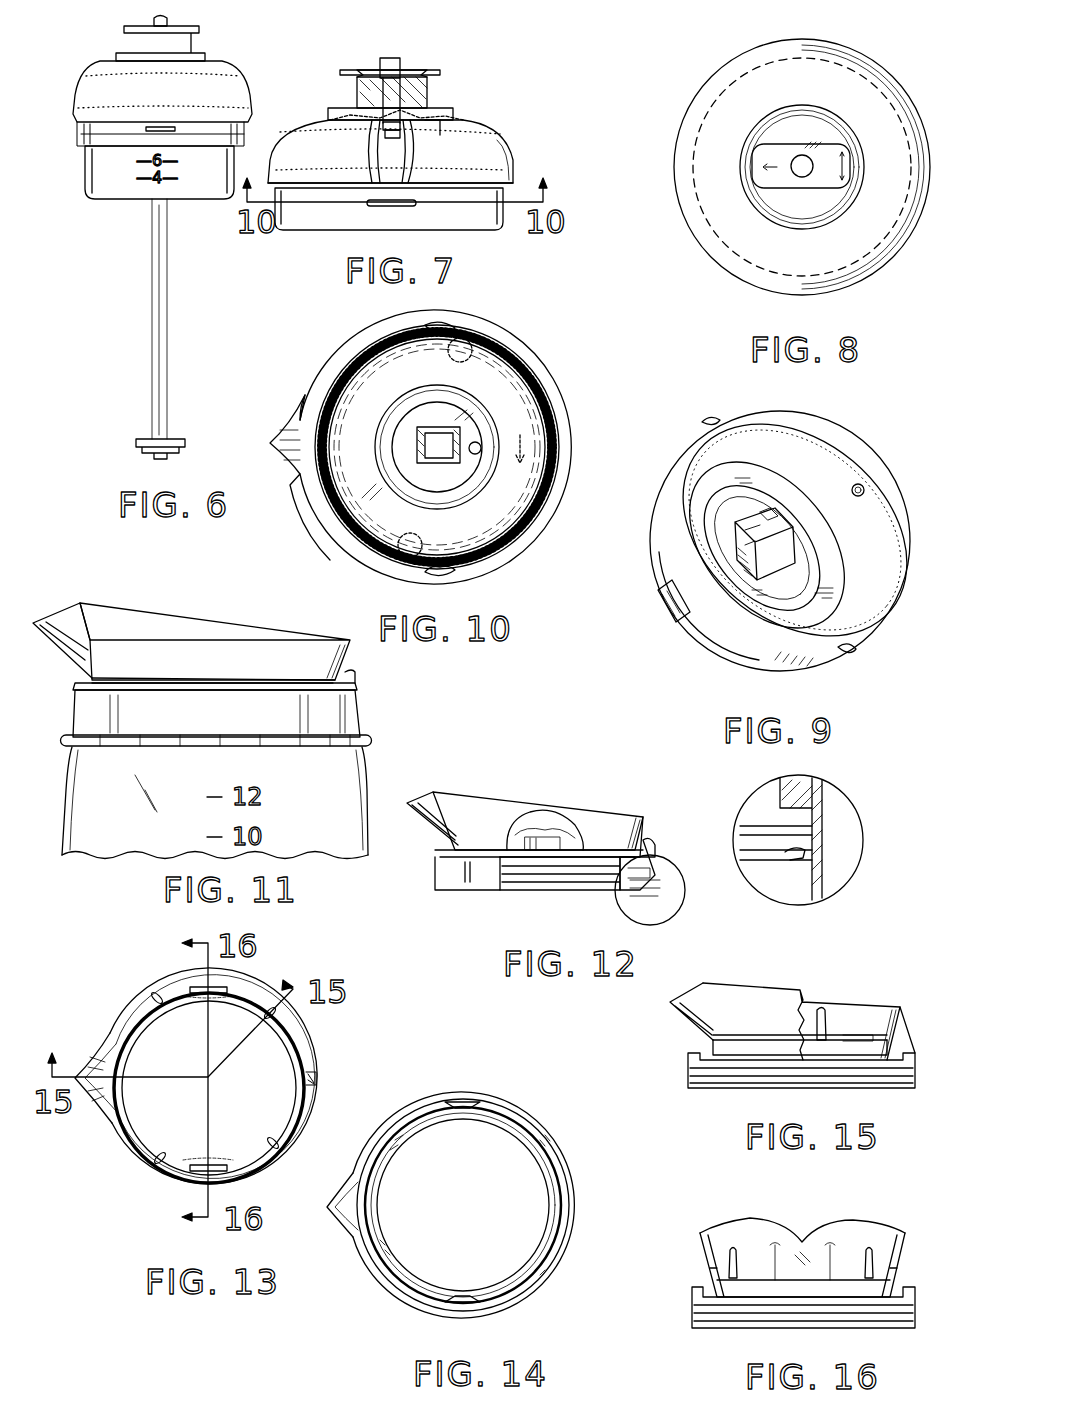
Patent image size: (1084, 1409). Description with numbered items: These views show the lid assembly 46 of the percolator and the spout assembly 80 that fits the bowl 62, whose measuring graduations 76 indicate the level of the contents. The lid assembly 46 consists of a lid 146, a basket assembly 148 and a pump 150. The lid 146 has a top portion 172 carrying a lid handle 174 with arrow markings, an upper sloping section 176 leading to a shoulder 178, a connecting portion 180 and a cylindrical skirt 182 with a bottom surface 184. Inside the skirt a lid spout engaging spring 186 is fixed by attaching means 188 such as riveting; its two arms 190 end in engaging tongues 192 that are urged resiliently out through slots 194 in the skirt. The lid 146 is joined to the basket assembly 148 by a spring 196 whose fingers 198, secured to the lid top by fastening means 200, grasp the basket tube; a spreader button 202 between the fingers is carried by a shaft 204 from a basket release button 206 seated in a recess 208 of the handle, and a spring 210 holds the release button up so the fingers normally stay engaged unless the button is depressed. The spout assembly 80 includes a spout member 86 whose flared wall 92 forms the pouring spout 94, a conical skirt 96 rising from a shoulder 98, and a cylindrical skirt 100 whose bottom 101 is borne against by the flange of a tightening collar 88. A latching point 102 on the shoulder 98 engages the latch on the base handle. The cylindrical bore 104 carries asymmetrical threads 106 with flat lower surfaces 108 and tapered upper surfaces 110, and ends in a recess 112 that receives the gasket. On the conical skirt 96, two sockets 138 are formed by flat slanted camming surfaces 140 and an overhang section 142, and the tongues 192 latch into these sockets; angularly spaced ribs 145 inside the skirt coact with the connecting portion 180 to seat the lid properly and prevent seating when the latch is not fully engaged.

In FIG. 6, the lid assembly 46 is at (240, 65).
In FIG. 9, the lid assembly 46 is at (650, 478).
In FIG. 11, the bowl 62 is at (70, 785).
In FIG. 11, the measuring graduations 76 is at (265, 825).
In FIG. 11, the spout assembly 80 is at (368, 706).
In FIG. 12, the spout assembly 80 is at (603, 808).
In FIG. 11, the spout member 86 is at (108, 662).
In FIG. 15, the spout member 86 is at (897, 1042).
In FIG. 11, the tightening collar 88 is at (183, 744).
In FIG. 10, the flared wall 92 is at (325, 362).
In FIG. 11, the flared wall 92 is at (145, 617).
In FIG. 12, the flared wall 92 is at (466, 803).
In FIG. 13, the flared wall 92 is at (155, 985).
In FIG. 15, the flared wall 92 is at (757, 990).
In FIG. 10, the pouring spout 94 is at (282, 430).
In FIG. 11, the pouring spout 94 is at (60, 615).
In FIG. 12, the pouring spout 94 is at (422, 800).
In FIG. 13, the pouring spout 94 is at (82, 1062).
In FIG. 14, the pouring spout 94 is at (335, 1195).
In FIG. 15, the pouring spout 94 is at (672, 1003).
In FIG. 16, the pouring spout 94 is at (802, 1240).
In FIG. 12, the conical skirt 96 is at (640, 825).
In FIG. 12, the shoulder 98 is at (440, 850).
In FIG. 15, the shoulder 98 is at (700, 1053).
In FIG. 11, the cylindrical skirt 100 is at (88, 717).
In FIG. 12, the cylindrical skirt 100 is at (452, 880).
In FIG. 12, the bottom of cylindrical skirt 101 is at (835, 878).
In FIG. 11, the latching point 102 is at (352, 673).
In FIG. 12, the latching point 102 is at (645, 840).
In FIG. 13, the latching point 102 is at (316, 1080).
In FIG. 12, the cylindrical bore 104 is at (530, 888).
In FIG. 14, the cylindrical bore 104 is at (545, 1160).
In FIG. 15, the cylindrical bore 104 is at (860, 1090).
In FIG. 16, the cylindrical bore 104 is at (735, 1325).
In FIG. 12, the threads 106 is at (645, 875).
In FIG. 12, the flat lower surfaces 108 is at (815, 853).
In FIG. 12, the tapered upper surfaces 110 is at (790, 860).
In FIG. 12, the recess 112 is at (800, 808).
In FIG. 14, the recess 112 is at (395, 1135).
In FIG. 10, the sockets 138 is at (455, 325).
In FIG. 13, the sockets 138 is at (190, 975).
In FIG. 14, the sockets 138 is at (480, 1100).
In FIG. 16, the sockets 138 is at (710, 1275).
In FIG. 12, the camming surfaces 140 is at (525, 835).
In FIG. 12, the overhang section 142 is at (540, 820).
In FIG. 13, the ribs 145 is at (269, 1020).
In FIG. 15, the ribs 145 is at (822, 1025).
In FIG. 16, the ribs 145 is at (870, 1255).
In FIG. 7, the lid 146 is at (506, 138).
In FIG. 6, the basket assembly 148 is at (83, 173).
In FIG. 6, the pump 150 is at (154, 348).
In FIG. 7, the top portion 172 is at (432, 130).
In FIG. 8, the top portion 172 is at (783, 140).
In FIG. 7, the lid handle 174 is at (410, 90).
In FIG. 8, the lid handle 174 is at (778, 190).
In FIG. 9, the lid handle 174 is at (663, 607).
In FIG. 7, the upper sloping section 176 is at (482, 120).
In FIG. 8, the upper sloping section 176 is at (716, 136).
In FIG. 7, the shoulder 178 is at (510, 160).
In FIG. 7, the connecting portion 180 is at (513, 182).
In FIG. 7, the cylindrical skirt 182 is at (480, 220).
In FIG. 9, the cylindrical skirt 182 is at (688, 452).
In FIG. 7, the bottom surface 184 is at (300, 232).
In FIG. 10, the lid spout engaging spring 186 is at (548, 440).
In FIG. 9, the lid spout engaging spring 186 is at (867, 498).
In FIG. 10, the attaching means 188 is at (548, 455).
In FIG. 9, the attaching means 188 is at (851, 490).
In FIG. 10, the arms 190 is at (500, 360).
In FIG. 9, the arms 190 is at (817, 450).
In FIG. 7, the engaging tongues 192 is at (400, 205).
In FIG. 10, the engaging tongues 192 is at (430, 325).
In FIG. 9, the engaging tongues 192 is at (710, 418).
In FIG. 6, the slots 194 is at (171, 126).
In FIG. 7, the slots 194 is at (372, 203).
In FIG. 7, the spring 196 is at (400, 105).
In FIG. 10, the spring 196 is at (420, 430).
In FIG. 9, the spring 196 is at (763, 518).
In FIG. 7, the fingers 198 is at (370, 150).
In FIG. 10, the fingers 198 is at (416, 445).
In FIG. 9, the fingers 198 is at (742, 538).
In FIG. 7, the fastening means 200 is at (358, 100).
In FIG. 7, the spreader button 202 is at (400, 145).
In FIG. 10, the spreader button 202 is at (440, 465).
In FIG. 9, the spreader button 202 is at (763, 567).
In FIG. 7, the shaft 204 is at (355, 75).
In FIG. 7, the basket release button 206 is at (390, 60).
In FIG. 7, the recess 208 is at (385, 80).
In FIG. 7, the spring 210 is at (410, 72).